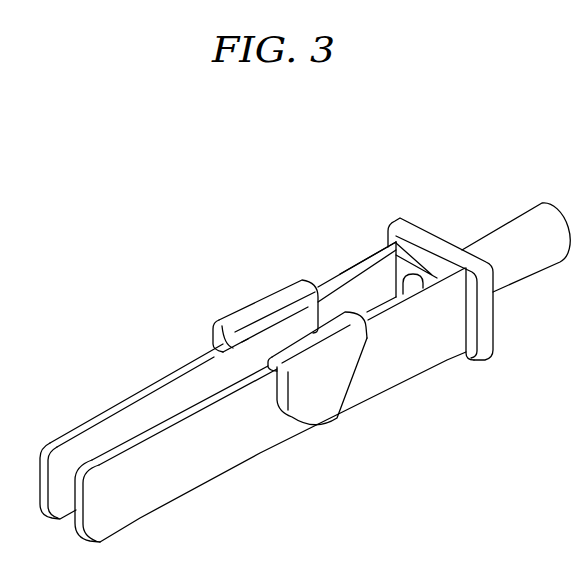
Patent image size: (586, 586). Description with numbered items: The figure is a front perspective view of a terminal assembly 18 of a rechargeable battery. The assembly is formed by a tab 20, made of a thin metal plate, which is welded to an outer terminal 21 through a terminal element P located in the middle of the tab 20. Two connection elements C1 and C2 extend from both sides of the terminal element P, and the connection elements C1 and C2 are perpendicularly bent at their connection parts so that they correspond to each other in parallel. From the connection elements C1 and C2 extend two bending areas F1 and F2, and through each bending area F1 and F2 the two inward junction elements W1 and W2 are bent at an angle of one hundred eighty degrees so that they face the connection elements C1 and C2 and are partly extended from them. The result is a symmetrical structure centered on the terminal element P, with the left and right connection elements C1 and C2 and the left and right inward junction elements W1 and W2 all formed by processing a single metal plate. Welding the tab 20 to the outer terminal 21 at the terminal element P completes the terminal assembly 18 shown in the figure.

The terminal assembly 18 is at (101, 222).
The tab 20 is at (214, 313).
The outer terminal 21 is at (509, 219).
The inward junction element W1 is at (129, 399).
The inward junction element W2 is at (190, 463).
The bending area F1 is at (259, 299).
The bending area F2 is at (322, 339).
The connection element C1 is at (351, 266).
The connection element C2 is at (431, 351).
The terminal element P is at (418, 258).